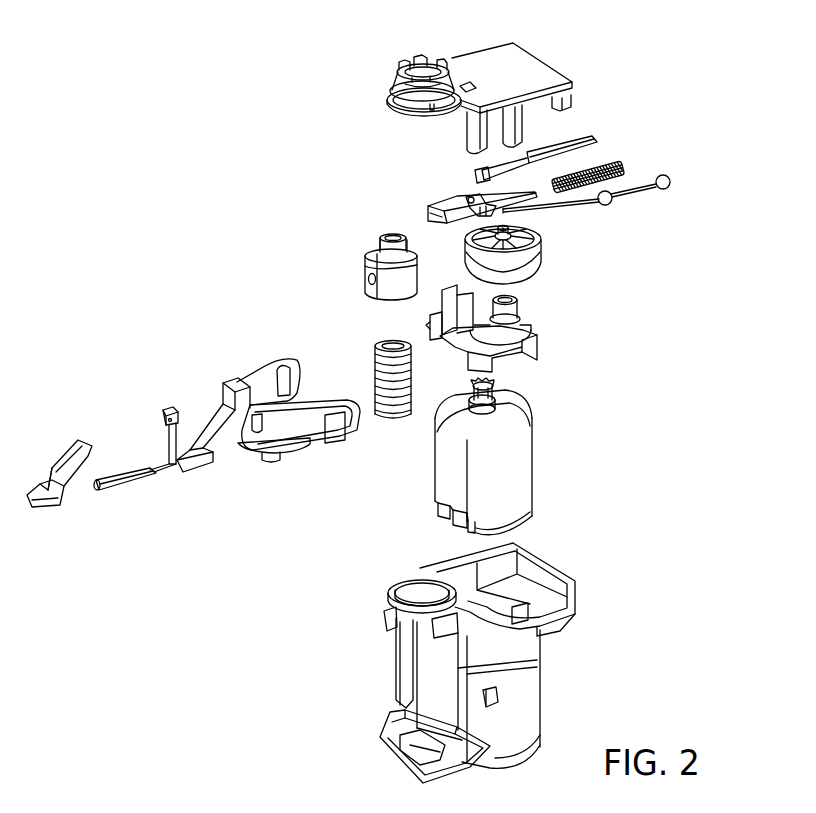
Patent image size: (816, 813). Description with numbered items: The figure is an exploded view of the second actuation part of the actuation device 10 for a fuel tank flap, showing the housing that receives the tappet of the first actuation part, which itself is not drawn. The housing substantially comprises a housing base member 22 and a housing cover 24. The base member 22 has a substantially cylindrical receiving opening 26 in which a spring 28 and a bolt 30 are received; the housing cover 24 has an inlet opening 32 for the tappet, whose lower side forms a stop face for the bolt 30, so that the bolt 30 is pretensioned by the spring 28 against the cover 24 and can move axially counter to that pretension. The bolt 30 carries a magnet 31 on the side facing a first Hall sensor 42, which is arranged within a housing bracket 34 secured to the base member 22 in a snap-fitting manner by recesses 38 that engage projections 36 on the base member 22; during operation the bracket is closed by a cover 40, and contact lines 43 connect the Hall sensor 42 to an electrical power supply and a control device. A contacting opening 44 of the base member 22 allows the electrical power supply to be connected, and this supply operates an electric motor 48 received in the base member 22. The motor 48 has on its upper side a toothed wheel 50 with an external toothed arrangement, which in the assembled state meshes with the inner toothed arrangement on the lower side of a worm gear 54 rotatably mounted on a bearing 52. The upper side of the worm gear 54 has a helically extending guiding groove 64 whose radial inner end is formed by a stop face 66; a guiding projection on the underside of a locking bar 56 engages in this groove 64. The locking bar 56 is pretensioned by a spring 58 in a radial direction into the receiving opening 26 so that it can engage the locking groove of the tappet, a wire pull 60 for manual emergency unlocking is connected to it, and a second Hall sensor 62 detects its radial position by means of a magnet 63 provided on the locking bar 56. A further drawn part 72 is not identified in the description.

The actuation device 10 is at (235, 256).
The housing base member 22 is at (469, 661).
The housing cover 24 is at (497, 50).
The receiving opening 26 is at (418, 590).
The spring 28 is at (390, 411).
The bolt 30 is at (369, 255).
The magnet 31 is at (368, 280).
The inlet opening 32 is at (428, 60).
The housing bracket 34 is at (268, 431).
The projections 36 is at (492, 708).
The recesses 38 is at (335, 437).
The cover 40 is at (65, 469).
The first Hall sensor 42 is at (170, 406).
The contact lines 43 is at (125, 489).
The contacting opening 44 is at (395, 740).
The electric motor 48 is at (503, 450).
The toothed wheel 50 is at (499, 389).
The bearing 52 is at (539, 349).
The worm gear 54 is at (507, 259).
The locking bar 56 is at (431, 205).
The spring 58 is at (607, 170).
The wire pull 60 is at (640, 199).
The second Hall sensor 62 is at (476, 168).
The magnet 63 is at (466, 197).
The guiding groove 64 is at (534, 239).
The stop face 66 is at (468, 243).
The neck 72 is at (385, 236).